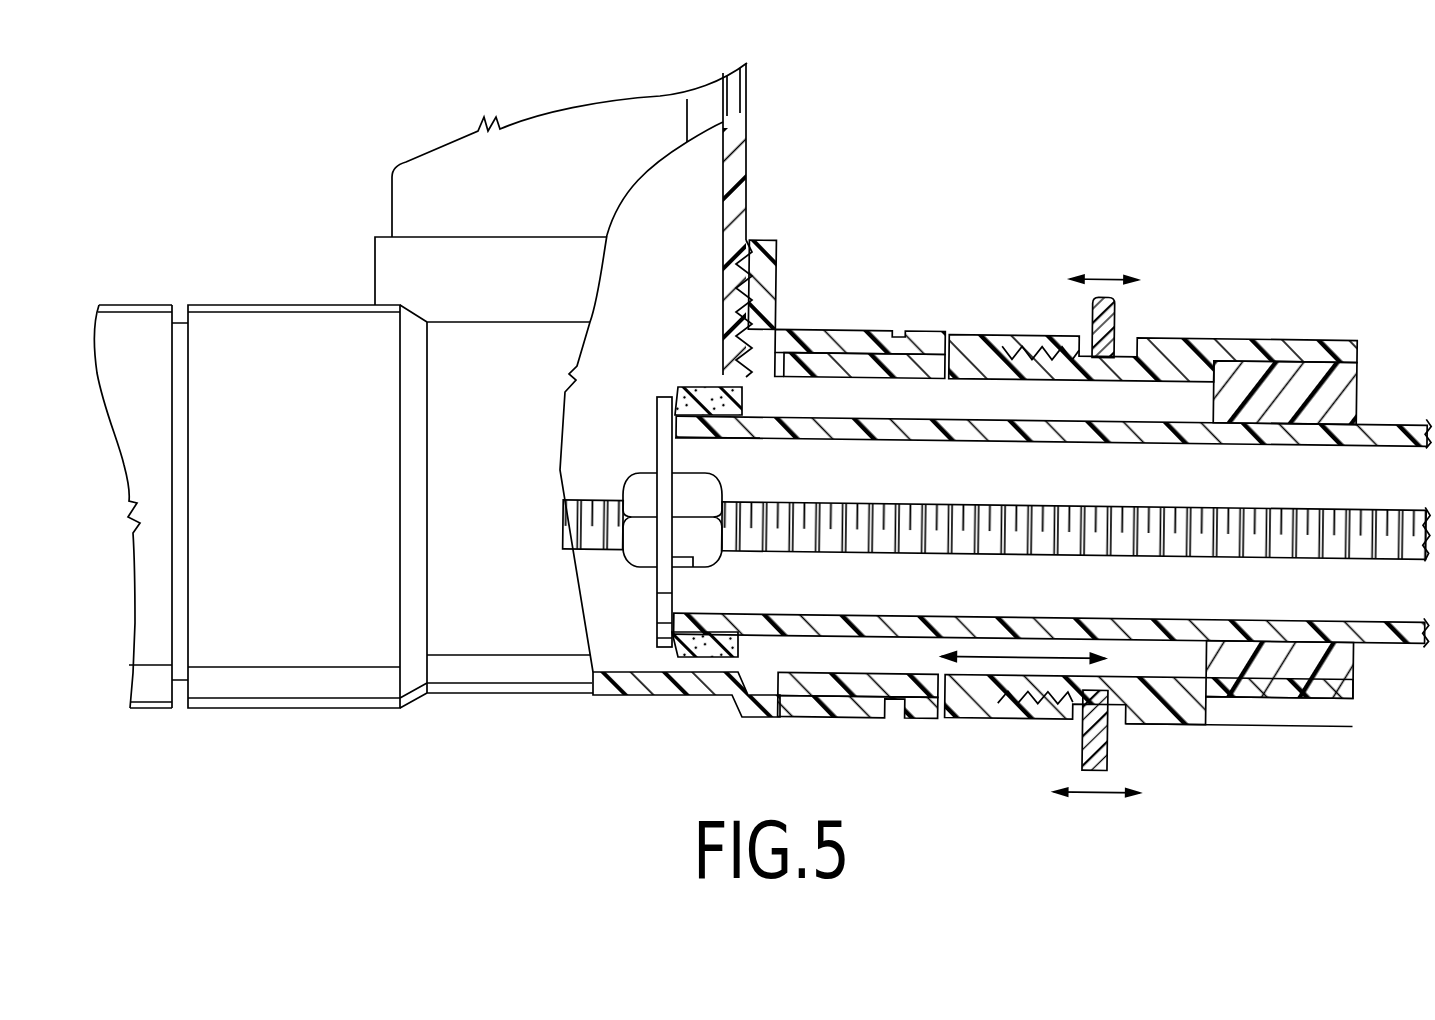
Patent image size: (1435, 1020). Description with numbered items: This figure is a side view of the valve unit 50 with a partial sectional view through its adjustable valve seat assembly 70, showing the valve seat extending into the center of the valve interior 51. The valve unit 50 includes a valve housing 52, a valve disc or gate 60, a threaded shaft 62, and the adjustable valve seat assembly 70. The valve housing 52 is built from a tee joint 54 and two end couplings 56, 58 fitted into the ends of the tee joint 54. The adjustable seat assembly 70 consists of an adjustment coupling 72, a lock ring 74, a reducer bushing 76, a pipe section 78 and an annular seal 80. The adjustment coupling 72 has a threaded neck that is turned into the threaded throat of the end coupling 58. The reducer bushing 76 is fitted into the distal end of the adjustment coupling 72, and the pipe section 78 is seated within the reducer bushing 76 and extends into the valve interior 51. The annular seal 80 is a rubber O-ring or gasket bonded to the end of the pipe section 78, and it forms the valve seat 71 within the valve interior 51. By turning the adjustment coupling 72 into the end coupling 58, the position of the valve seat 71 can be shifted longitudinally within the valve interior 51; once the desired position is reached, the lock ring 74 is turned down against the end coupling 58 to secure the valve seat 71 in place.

The valve unit 50 is at (925, 127).
The valve interior 51 is at (641, 611).
The valve housing 52 is at (343, 716).
The tee joint 54 is at (320, 304).
The end coupling 56 is at (142, 304).
The end coupling 58 is at (963, 329).
The valve disc or gate 60 is at (663, 433).
The threaded shaft 62 is at (595, 507).
The adjustable valve seat assembly 70 is at (1218, 738).
The valve seat 71 is at (757, 477).
The adjustment coupling 72 is at (1230, 340).
The lock ring 74 is at (1113, 318).
The reducer bushing 76 is at (1357, 386).
The pipe section 78 is at (1032, 420).
The annular seal 80 is at (698, 390).